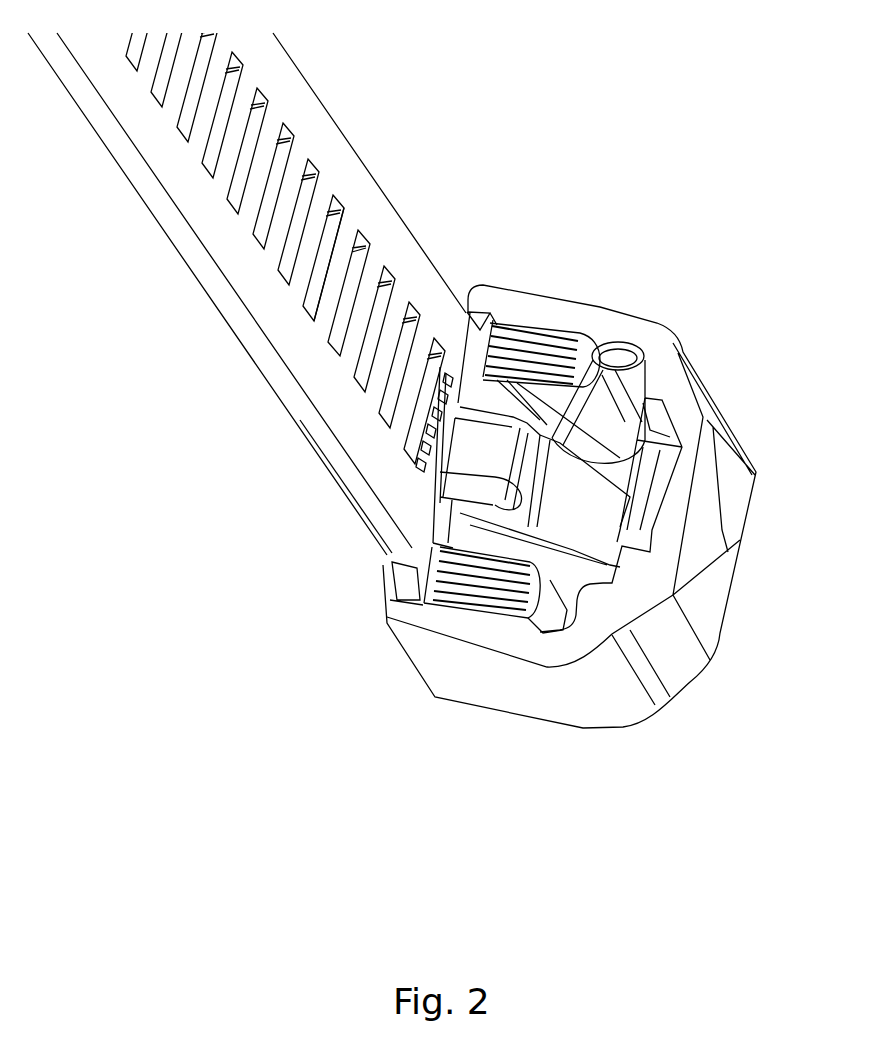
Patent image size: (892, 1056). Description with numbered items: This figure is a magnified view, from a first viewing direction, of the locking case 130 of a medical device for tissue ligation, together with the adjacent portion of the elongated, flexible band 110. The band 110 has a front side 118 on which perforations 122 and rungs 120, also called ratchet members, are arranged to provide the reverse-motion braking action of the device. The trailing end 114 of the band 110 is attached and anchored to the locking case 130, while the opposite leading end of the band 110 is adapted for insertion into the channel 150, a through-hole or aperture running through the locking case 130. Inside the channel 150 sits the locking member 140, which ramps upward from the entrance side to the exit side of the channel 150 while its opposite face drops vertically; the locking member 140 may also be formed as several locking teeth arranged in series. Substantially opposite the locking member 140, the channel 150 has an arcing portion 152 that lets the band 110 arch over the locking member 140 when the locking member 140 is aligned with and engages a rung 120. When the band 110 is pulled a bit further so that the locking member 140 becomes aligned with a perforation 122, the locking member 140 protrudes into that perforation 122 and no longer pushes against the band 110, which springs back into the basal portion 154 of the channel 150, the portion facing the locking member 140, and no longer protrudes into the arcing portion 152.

The band 110 is at (305, 420).
The trailing end 114 is at (397, 600).
The front side 118 is at (377, 480).
The rungs 120 is at (307, 263).
The perforations 122 is at (343, 332).
The locking case 130 is at (442, 687).
The locking member 140 is at (568, 523).
The channel 150 is at (613, 438).
The arcing portion 152 is at (637, 510).
The basal portion 154 is at (573, 617).